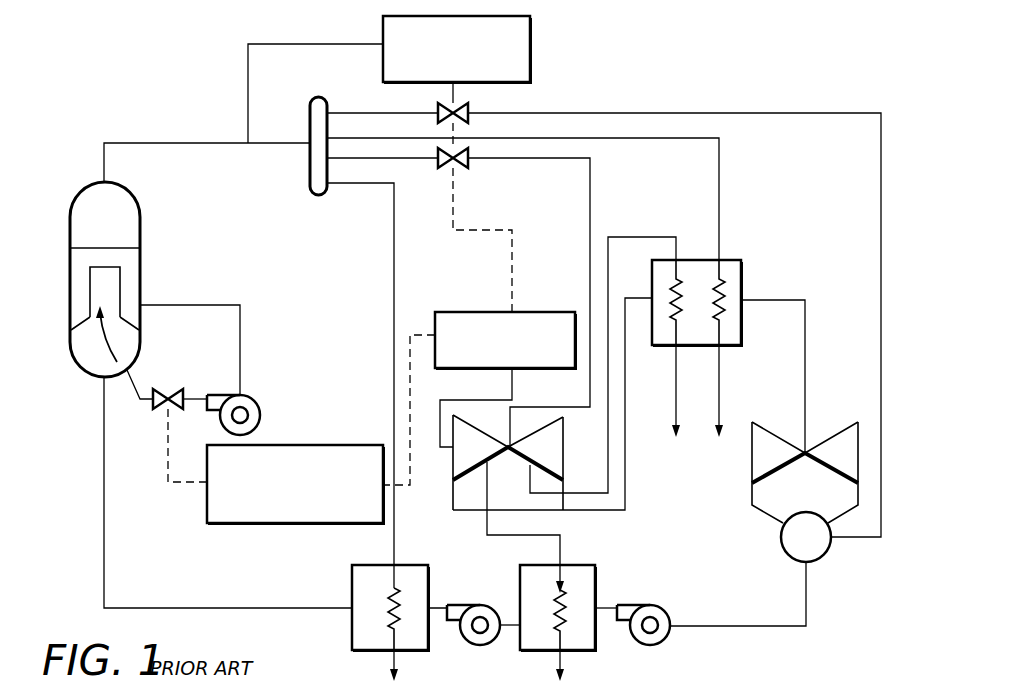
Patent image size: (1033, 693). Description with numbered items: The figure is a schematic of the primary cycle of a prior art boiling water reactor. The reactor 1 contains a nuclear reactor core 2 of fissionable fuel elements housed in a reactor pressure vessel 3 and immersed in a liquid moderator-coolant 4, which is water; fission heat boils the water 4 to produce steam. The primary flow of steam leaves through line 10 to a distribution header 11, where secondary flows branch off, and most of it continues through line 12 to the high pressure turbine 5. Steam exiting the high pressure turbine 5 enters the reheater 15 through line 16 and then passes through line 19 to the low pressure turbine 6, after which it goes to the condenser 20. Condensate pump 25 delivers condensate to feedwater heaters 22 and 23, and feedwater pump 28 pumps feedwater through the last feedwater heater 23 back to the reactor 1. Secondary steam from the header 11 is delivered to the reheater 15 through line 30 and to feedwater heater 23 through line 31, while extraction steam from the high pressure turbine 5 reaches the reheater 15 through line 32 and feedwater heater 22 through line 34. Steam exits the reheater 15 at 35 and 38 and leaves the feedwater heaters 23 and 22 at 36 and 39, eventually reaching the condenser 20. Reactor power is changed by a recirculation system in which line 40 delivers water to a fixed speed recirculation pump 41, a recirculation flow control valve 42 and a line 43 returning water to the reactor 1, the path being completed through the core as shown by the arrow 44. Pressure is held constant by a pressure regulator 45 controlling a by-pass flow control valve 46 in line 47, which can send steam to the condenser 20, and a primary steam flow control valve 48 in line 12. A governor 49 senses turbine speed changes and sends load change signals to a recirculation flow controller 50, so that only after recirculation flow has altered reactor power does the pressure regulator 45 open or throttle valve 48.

The reactor 1 is at (61, 196).
The nuclear reactor core 2 is at (104, 287).
The reactor pressure vessel 3 is at (142, 216).
The liquid moderator-coolant 4 is at (72, 279).
The high pressure turbine 5 is at (461, 437).
The low pressure turbine 6 is at (773, 437).
The line 10 is at (239, 142).
The distribution header 11 is at (308, 134).
The line 12 is at (402, 165).
The reheater 15 is at (738, 261).
The line 16 is at (626, 404).
The line 19 is at (806, 341).
The condenser 20 is at (785, 555).
The feedwater heater 22 is at (596, 588).
The feedwater heater 23 is at (350, 580).
The condensate pump 25 is at (668, 608).
The feedwater pump 28 is at (492, 608).
The line 30 is at (719, 193).
The line 31 is at (395, 254).
The line 32 is at (647, 240).
The line 34 is at (558, 550).
The reheater primary steam exit 35 is at (716, 406).
The feedwater heater steam exit 36 is at (407, 669).
The reheater extraction steam exit 38 is at (673, 406).
The feedwater heater extraction steam exit 39 is at (573, 669).
The line 40 is at (203, 310).
The recirculation pump 41 is at (248, 398).
The recirculation flow control valve 42 is at (168, 389).
The line 43 is at (131, 389).
The arrow 44 is at (118, 353).
The pressure regulator 45 is at (531, 44).
The by-pass flow control valve 46 is at (468, 113).
The line 47 is at (605, 116).
The primary steam flow control valve 48 is at (467, 165).
The governor 49 is at (554, 312).
The recirculation flow controller 50 is at (311, 448).